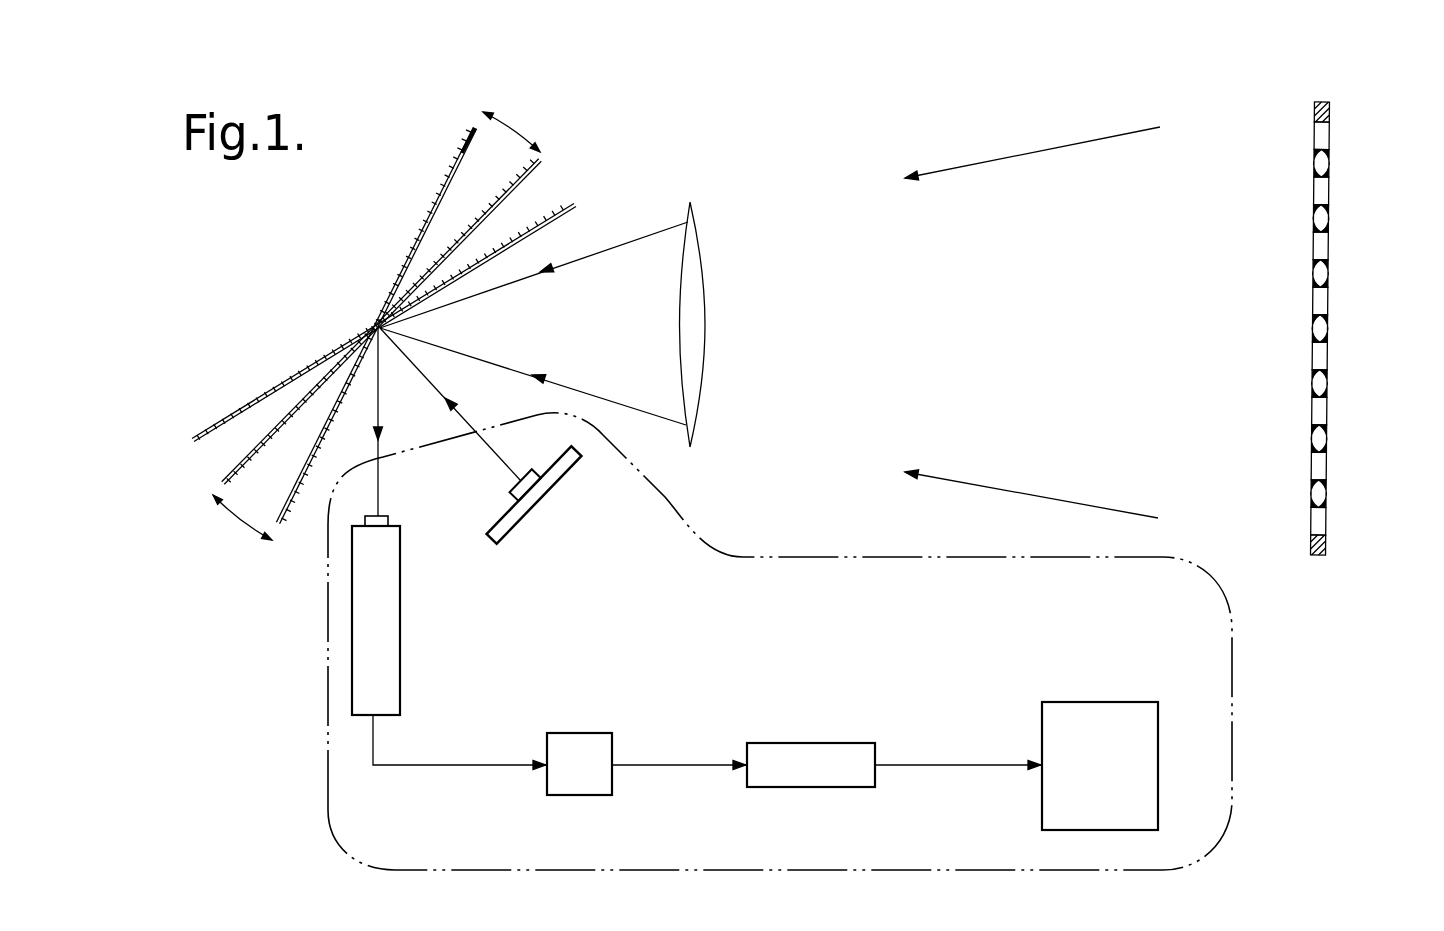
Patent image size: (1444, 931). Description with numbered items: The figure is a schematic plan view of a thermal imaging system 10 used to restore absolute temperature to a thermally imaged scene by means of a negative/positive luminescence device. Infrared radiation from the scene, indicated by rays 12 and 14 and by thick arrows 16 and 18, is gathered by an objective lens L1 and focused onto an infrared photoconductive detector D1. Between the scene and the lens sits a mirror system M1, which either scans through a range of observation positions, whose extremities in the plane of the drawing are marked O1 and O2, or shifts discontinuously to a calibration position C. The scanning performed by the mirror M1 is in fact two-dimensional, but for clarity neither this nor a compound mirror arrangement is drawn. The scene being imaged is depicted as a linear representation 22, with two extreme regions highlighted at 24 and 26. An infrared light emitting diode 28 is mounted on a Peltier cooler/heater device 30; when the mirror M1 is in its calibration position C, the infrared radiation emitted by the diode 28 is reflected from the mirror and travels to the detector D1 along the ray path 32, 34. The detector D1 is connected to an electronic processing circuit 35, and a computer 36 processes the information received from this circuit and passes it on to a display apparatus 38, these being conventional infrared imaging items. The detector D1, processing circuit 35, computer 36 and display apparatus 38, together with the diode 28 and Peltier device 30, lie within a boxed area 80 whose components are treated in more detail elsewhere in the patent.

The thermal imaging system 10 is at (855, 115).
The ray 12 is at (598, 250).
The ray 14 is at (595, 392).
The thick arrow 16 is at (1100, 139).
The thick arrow 18 is at (1102, 508).
The linear representation of scene 22 is at (1361, 336).
The extreme region 24 is at (1331, 108).
The extreme region 26 is at (1325, 553).
The infrared light emitting diode 28 is at (508, 493).
The Peltier cooler/heater device 30 is at (576, 474).
The ray path 32 is at (468, 424).
The ray path 34 is at (407, 398).
The electronic processing circuit 35 is at (566, 735).
The computer 36 is at (788, 757).
The display apparatus 38 is at (1117, 728).
The boxed area 80 is at (1231, 779).
The infrared photoconductive detector D1 is at (368, 657).
The objective lens L1 is at (701, 248).
The mirror system M1 is at (394, 301).
The observation position extremity O1 is at (480, 104).
The observation position extremity O2 is at (543, 150).
The calibration position C is at (573, 203).